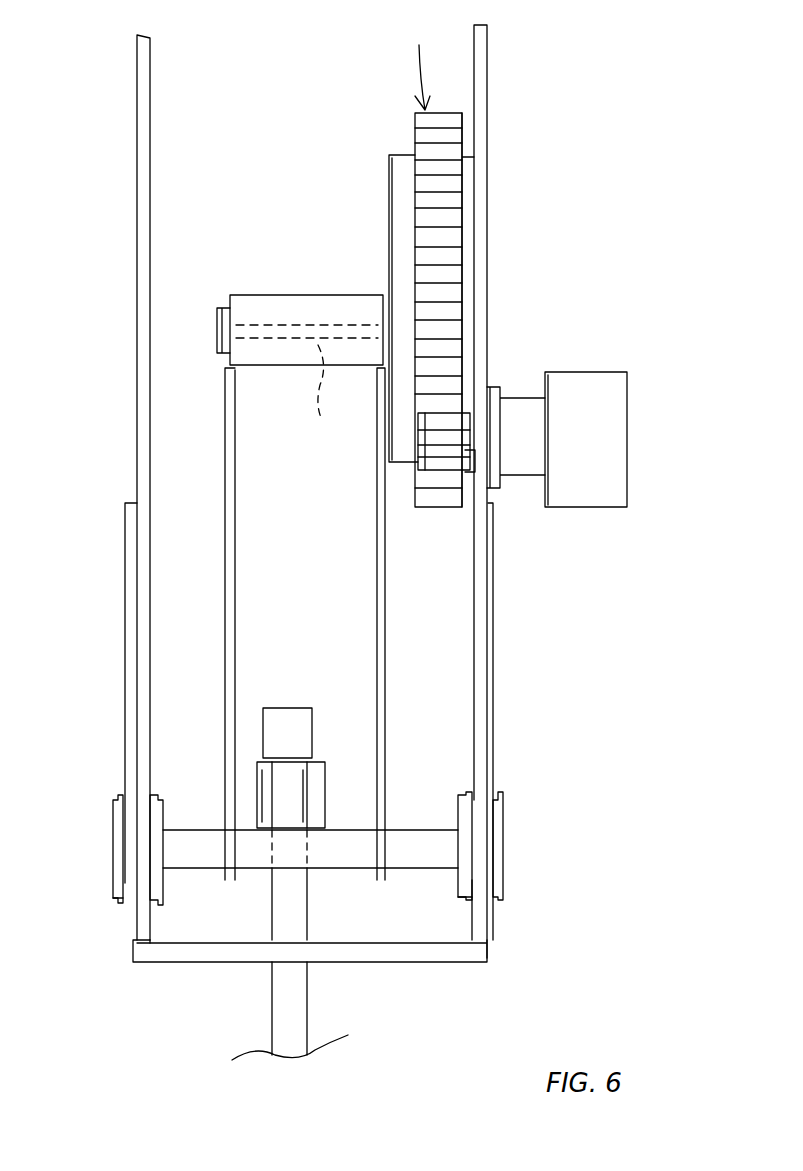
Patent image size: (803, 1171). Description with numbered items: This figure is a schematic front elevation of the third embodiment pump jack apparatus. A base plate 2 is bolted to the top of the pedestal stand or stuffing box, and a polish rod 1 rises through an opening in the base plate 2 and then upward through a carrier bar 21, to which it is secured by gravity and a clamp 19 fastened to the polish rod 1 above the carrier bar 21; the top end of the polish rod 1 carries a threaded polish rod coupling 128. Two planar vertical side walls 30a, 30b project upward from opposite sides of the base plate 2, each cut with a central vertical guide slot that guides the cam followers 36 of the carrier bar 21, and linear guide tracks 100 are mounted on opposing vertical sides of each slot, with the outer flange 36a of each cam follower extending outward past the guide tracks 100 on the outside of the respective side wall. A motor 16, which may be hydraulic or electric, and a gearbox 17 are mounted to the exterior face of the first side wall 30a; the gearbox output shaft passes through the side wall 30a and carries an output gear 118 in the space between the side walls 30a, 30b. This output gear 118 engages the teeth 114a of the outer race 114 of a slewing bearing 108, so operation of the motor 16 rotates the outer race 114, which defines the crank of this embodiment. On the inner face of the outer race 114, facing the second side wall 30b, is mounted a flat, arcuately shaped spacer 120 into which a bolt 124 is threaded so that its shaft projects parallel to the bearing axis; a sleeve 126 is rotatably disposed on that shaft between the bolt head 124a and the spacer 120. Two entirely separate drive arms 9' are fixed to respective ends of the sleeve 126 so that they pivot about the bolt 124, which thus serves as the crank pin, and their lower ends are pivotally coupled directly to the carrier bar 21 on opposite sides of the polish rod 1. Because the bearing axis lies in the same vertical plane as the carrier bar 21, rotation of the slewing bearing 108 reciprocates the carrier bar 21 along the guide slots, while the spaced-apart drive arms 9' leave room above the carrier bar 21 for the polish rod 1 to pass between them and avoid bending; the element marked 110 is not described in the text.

The polish rod 1 is at (293, 1012).
The base plate 2 is at (433, 955).
The drive arms 9' is at (305, 624).
The motor 16 is at (593, 392).
The gearbox 17 is at (513, 413).
The clamp 19 is at (320, 778).
The carrier bar 21 is at (185, 855).
The first side wall 30a is at (487, 95).
The second side wall 30b is at (137, 132).
The cam followers 36 is at (103, 832).
The outer flange 36a is at (113, 900).
The linear guide tracks 100 is at (128, 654).
The slewing bearing 108 is at (423, 58).
The rack support bar 110 is at (468, 200).
The outer race 114 is at (412, 160).
The teeth 114a is at (430, 218).
The output gear 118 is at (447, 455).
The spacer 120 is at (395, 265).
The bolt 124 is at (345, 397).
The bolt head 124a is at (215, 325).
The sleeve 126 is at (260, 315).
The threaded polish rod coupling 128 is at (288, 727).